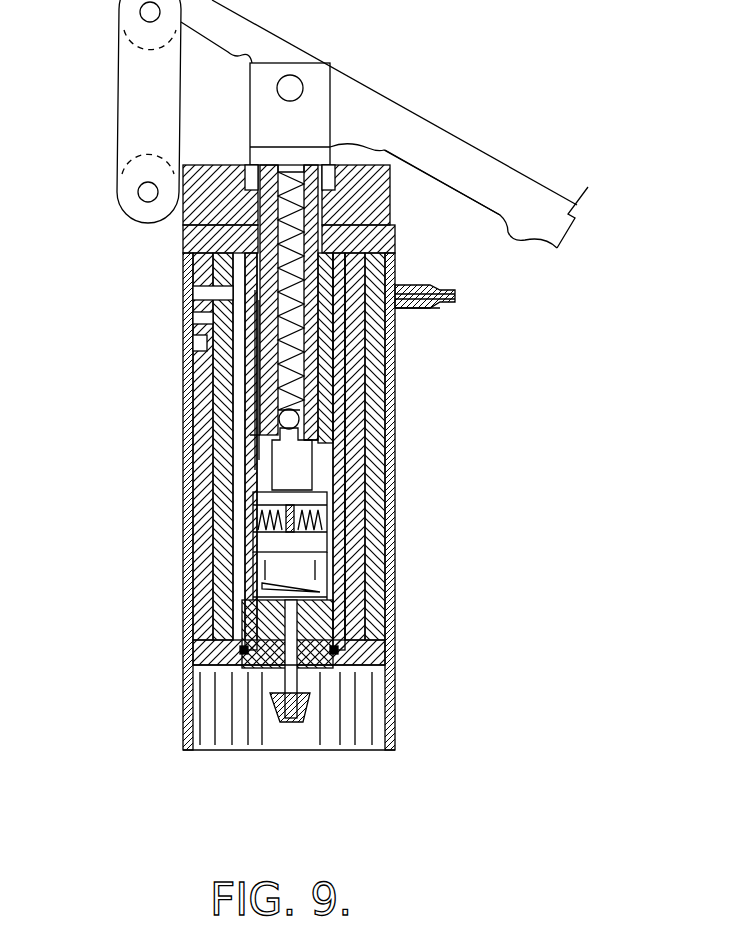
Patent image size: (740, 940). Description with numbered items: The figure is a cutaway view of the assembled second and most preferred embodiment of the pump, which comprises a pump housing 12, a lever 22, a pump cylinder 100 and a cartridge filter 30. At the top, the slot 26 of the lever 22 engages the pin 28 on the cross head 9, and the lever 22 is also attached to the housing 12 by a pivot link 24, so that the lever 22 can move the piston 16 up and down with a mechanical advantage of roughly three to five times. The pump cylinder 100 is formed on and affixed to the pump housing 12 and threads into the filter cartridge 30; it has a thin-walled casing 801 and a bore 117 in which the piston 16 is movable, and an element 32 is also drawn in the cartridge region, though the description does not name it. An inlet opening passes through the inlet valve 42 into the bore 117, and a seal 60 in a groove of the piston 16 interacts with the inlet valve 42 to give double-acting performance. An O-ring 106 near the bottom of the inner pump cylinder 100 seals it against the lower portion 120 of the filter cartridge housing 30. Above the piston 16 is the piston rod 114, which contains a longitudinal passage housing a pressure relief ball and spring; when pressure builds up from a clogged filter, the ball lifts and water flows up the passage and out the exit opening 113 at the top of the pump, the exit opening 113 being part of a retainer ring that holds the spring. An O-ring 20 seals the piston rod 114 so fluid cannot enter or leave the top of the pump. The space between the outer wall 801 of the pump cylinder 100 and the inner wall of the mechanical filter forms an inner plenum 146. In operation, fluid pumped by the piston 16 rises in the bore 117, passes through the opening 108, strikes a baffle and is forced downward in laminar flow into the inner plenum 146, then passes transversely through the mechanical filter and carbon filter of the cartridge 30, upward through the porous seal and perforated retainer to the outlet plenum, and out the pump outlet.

The cross head 9 is at (275, 125).
The pump housing 12 is at (392, 200).
The piston 16 is at (255, 566).
The O-ring 20 is at (333, 208).
The lever 22 is at (498, 188).
The pivot link 24 is at (155, 113).
The slot 26 is at (332, 112).
The pin 28 is at (291, 78).
The cartridge filter 30 is at (410, 477).
The cylinder bore 32 is at (395, 390).
The inlet valve 42 is at (328, 592).
The seal 60 is at (255, 512).
The pump cylinder 100 is at (183, 468).
The O-ring 106 is at (395, 652).
The opening 108 is at (240, 270).
The exit opening 113 is at (290, 163).
The piston rod 114 is at (262, 390).
The bore 117 is at (330, 580).
The lower portion 120 is at (395, 690).
The inner plenum 146 is at (340, 450).
The thin-walled casing 801 is at (345, 328).